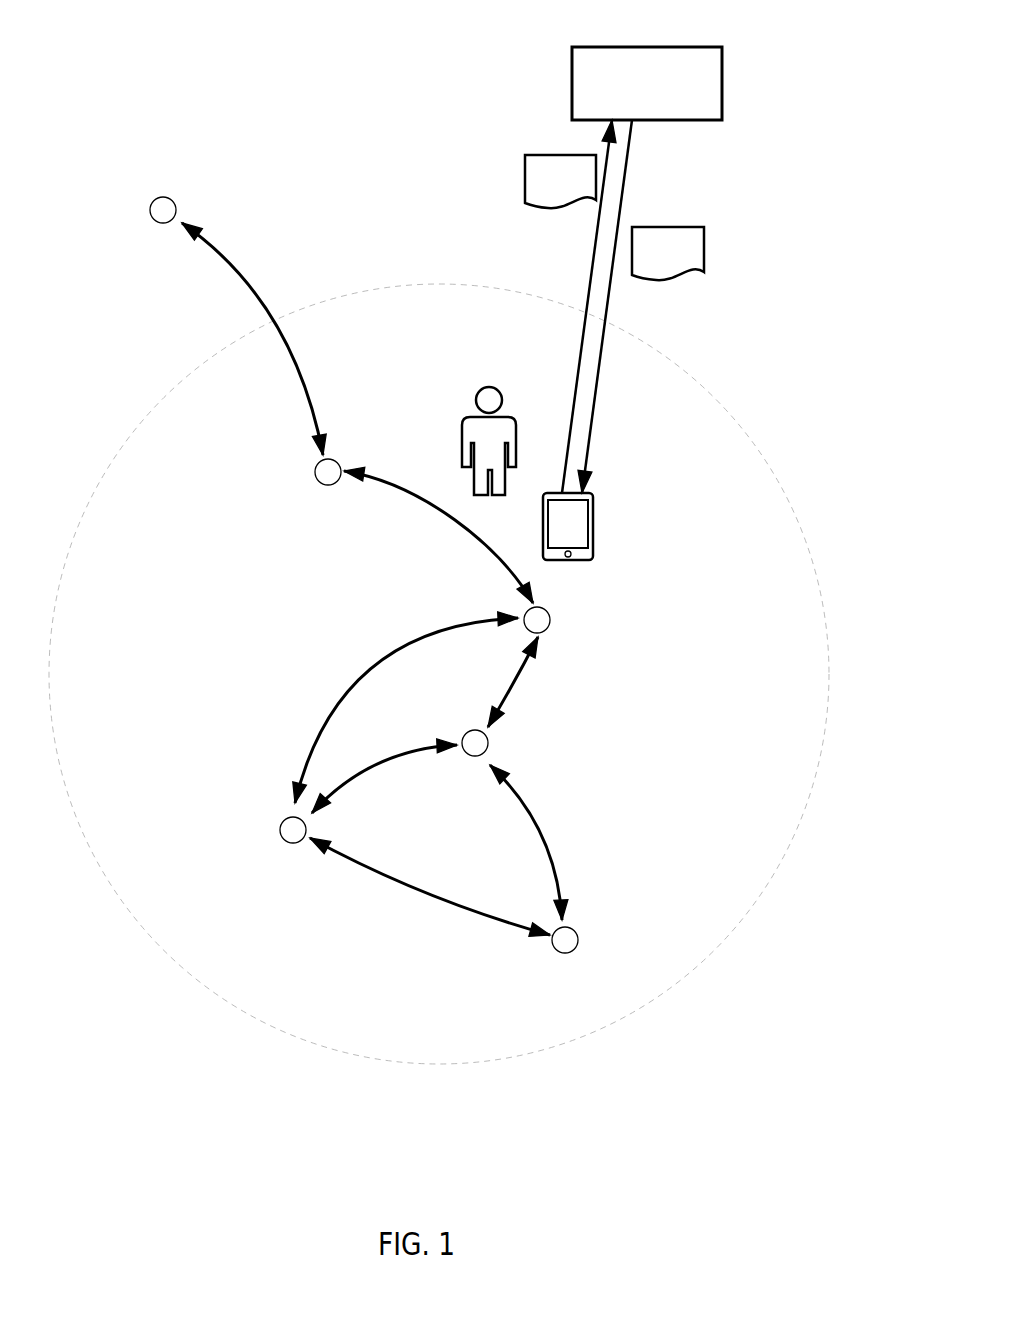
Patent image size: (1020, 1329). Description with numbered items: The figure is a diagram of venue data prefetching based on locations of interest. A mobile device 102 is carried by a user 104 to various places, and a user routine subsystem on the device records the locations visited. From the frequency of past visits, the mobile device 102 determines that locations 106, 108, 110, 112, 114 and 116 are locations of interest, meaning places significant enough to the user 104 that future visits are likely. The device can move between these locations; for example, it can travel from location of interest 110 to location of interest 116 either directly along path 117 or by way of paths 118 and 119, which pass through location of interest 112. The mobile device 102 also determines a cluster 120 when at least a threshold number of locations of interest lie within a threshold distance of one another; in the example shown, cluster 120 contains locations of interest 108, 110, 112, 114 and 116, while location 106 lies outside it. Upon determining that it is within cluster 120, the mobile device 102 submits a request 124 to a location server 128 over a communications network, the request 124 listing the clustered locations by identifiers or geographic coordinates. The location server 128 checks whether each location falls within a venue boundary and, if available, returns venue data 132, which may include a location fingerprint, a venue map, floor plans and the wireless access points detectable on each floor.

The mobile device 102 is at (593, 492).
The user 104 is at (475, 417).
The location of interest 106 is at (150, 200).
The location of interest 108 is at (317, 462).
The location of interest 110 is at (552, 615).
The location of interest 112 is at (490, 738).
The location of interest 114 is at (573, 925).
The location of interest 116 is at (280, 830).
The path 117 is at (377, 662).
The path 118 is at (523, 670).
The path 119 is at (353, 782).
The cluster 120 is at (163, 395).
The request 124 is at (560, 181).
The location server 128 is at (572, 60).
The venue data 132 is at (668, 253).